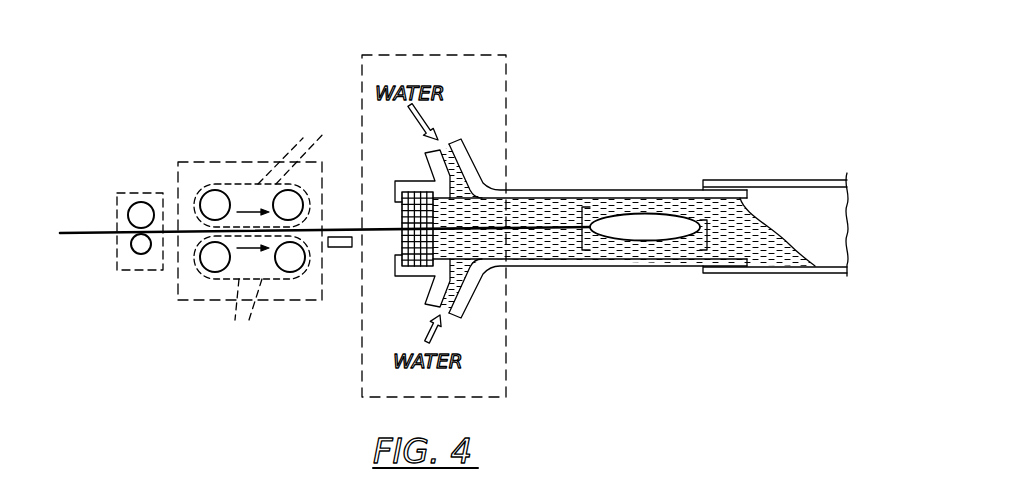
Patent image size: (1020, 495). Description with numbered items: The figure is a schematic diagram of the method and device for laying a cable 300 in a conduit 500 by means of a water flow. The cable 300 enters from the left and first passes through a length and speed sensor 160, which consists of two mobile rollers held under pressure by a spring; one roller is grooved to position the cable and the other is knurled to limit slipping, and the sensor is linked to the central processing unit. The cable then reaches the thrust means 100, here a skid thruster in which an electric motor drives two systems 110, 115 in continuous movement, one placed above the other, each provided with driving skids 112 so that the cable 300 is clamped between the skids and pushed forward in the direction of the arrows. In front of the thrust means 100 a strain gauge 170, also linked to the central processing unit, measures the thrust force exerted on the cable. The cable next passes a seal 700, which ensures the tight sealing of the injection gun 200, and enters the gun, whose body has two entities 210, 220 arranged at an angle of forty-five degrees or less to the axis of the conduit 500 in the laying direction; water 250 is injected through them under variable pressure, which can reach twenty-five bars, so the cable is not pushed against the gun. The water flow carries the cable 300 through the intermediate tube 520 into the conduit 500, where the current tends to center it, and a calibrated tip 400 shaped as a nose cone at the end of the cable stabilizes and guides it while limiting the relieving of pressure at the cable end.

The thrust means 100 is at (255, 167).
The system 110 is at (193, 160).
The driving skids 112 is at (281, 235).
The system 115 is at (200, 298).
The length and speed sensor 160 is at (137, 193).
The strain gauge 170 is at (343, 248).
The injection gun 200 is at (456, 28).
The entity of the injection gun body 210 is at (450, 140).
The entity of the injection gun body 220 is at (431, 306).
The water 250 is at (537, 213).
The cable 300 is at (77, 232).
The calibrated tip 400 is at (655, 233).
The conduit 500 is at (797, 182).
The intermediate tube 520 is at (657, 192).
The seal 700 is at (396, 213).